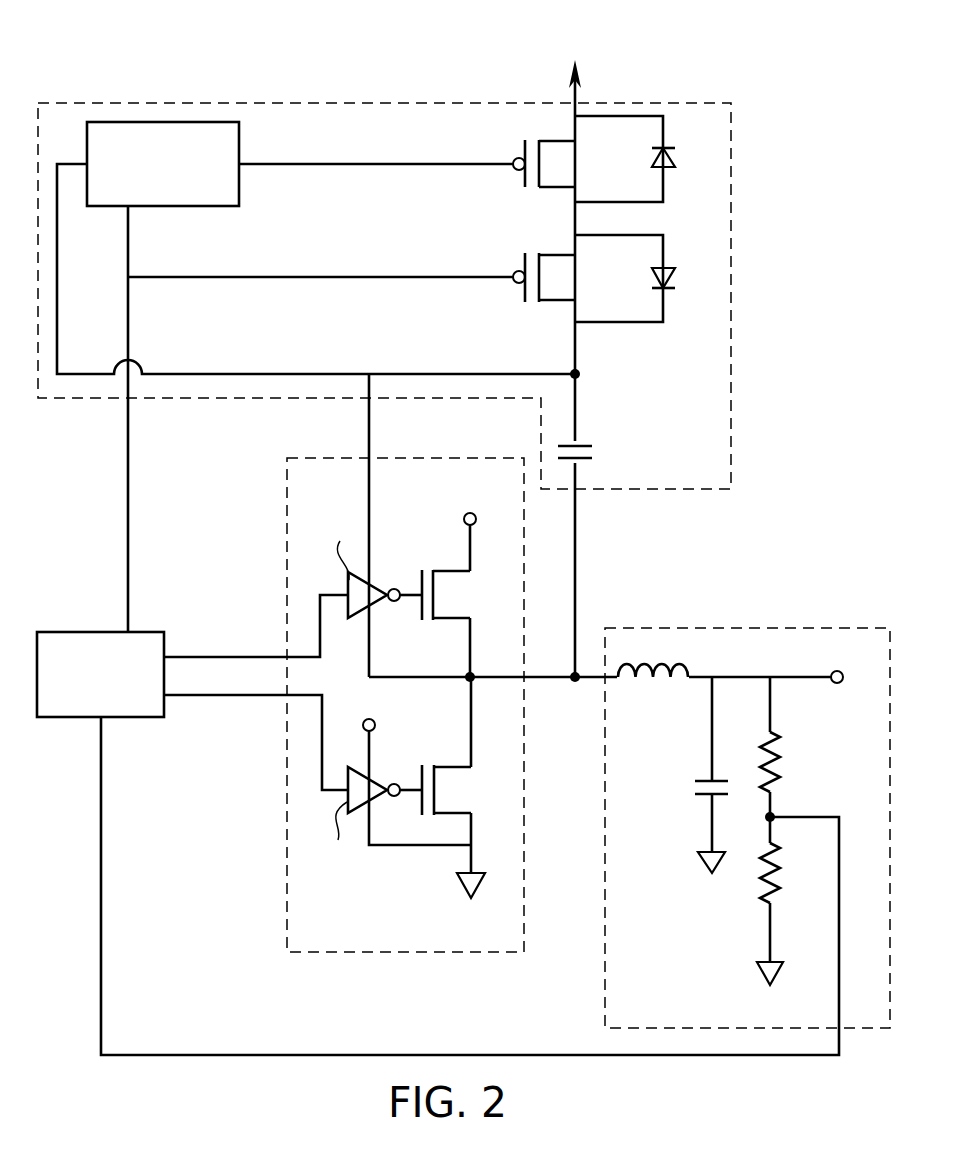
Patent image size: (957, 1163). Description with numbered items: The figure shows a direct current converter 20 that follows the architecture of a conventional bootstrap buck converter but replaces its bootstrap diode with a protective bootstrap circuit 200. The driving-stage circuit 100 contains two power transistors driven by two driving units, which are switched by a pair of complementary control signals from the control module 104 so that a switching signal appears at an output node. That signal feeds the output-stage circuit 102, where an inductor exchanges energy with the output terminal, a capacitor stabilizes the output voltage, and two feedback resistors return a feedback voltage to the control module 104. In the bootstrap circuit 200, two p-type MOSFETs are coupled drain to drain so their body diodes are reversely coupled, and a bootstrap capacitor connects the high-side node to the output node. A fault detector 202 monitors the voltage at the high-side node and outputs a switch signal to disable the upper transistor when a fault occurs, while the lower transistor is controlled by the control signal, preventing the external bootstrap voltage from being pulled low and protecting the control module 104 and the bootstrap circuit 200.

The direct current converter 20 is at (722, 52).
The bootstrap circuit 200 is at (732, 212).
The fault detector 202 is at (145, 122).
The driving-stage circuit 100 is at (318, 458).
The output-stage circuit 102 is at (787, 628).
The control module 104 is at (97, 632).